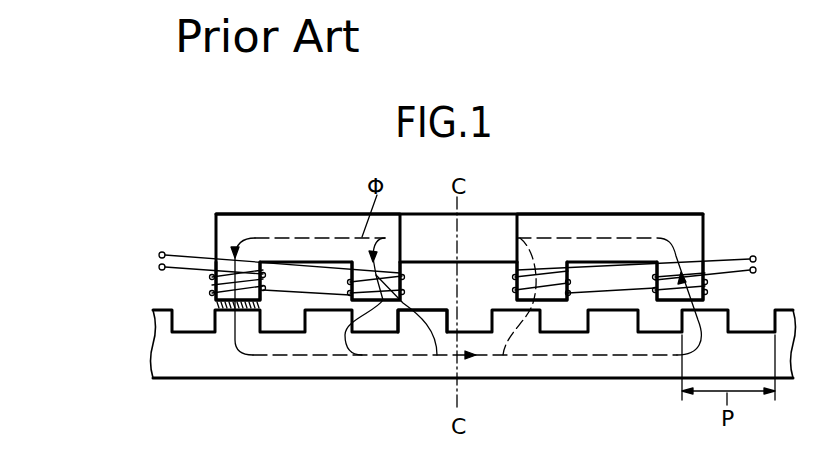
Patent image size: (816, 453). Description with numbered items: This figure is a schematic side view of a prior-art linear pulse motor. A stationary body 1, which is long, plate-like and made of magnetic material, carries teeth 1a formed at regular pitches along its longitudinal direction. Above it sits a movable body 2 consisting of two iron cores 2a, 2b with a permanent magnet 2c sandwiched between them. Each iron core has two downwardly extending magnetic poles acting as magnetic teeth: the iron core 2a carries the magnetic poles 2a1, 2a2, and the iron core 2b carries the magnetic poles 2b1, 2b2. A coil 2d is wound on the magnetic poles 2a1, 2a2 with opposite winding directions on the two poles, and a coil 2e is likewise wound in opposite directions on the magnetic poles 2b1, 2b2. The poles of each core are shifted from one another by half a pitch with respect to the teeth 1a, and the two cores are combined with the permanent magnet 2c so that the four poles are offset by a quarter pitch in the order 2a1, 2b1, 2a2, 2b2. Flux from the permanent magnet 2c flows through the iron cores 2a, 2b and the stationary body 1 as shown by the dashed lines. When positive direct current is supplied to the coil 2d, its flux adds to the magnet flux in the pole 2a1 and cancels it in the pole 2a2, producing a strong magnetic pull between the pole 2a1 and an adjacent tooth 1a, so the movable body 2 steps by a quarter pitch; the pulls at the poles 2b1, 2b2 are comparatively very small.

The stationary body 1 is at (607, 368).
The teeth 1a is at (428, 318).
The movable body 2 is at (459, 232).
The iron core 2a is at (287, 227).
The iron core 2b is at (665, 218).
The permanent magnet 2c is at (483, 228).
The coil 2d is at (180, 257).
The coil 2e is at (740, 257).
The magnetic pole 2a1 is at (215, 304).
The magnetic pole 2a2 is at (383, 323).
The magnetic pole 2b1 is at (548, 302).
The magnetic pole 2b2 is at (700, 295).